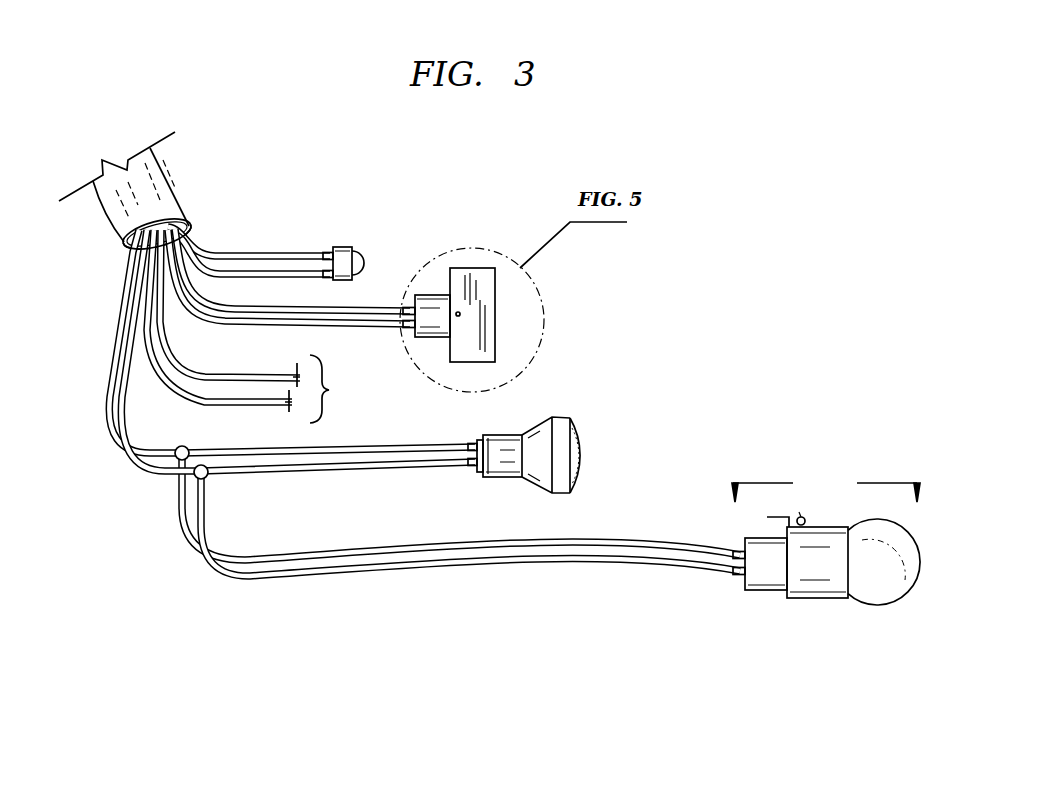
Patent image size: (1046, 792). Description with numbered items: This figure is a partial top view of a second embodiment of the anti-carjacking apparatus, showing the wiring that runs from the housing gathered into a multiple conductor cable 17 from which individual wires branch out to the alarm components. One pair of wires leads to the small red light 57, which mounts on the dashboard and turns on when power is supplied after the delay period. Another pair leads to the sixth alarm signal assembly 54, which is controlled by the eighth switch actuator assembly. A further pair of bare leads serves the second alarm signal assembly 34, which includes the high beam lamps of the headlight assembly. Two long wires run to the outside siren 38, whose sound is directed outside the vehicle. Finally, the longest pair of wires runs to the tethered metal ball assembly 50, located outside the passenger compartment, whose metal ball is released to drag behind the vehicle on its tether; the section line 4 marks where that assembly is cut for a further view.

The sleeve / conduit of wiring harness 17 is at (160, 182).
The connector 57 is at (346, 267).
The connector 54 is at (492, 337).
The wire leads 34 is at (333, 389).
The lamp connector 38 is at (616, 438).
The section line for FIG. 4 is at (811, 508).
The bulb socket assembly 50 is at (878, 599).